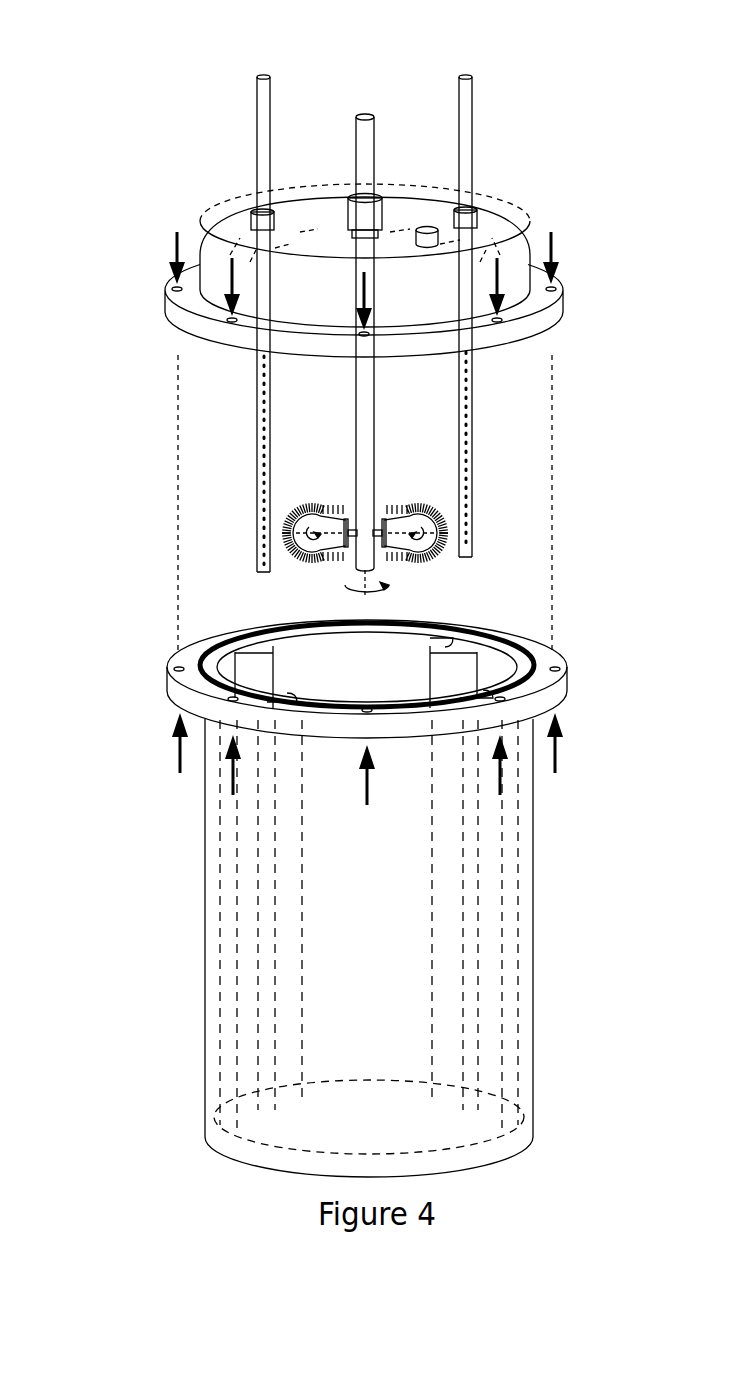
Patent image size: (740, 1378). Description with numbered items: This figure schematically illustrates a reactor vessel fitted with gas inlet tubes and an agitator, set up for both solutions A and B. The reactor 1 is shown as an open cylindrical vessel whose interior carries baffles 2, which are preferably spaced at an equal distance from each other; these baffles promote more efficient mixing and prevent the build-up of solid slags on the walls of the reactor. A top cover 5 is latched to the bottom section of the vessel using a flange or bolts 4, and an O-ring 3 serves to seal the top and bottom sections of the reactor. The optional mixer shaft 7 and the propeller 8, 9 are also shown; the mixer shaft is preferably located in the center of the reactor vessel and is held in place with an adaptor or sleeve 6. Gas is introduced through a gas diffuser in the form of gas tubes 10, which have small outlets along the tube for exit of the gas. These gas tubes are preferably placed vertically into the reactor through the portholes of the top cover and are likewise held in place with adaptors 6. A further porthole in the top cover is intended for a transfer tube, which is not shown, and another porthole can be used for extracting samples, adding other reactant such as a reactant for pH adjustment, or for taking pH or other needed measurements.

The reactor 1 is at (533, 947).
The baffles 2 is at (455, 675).
The O-ring 3 is at (207, 648).
The flange or bolts 4 is at (170, 767).
The top cover 5 is at (517, 233).
The adaptor or sleeve 6 is at (353, 212).
The mixer shaft 7 is at (372, 115).
The propeller 8 is at (428, 503).
The propeller 9 is at (464, 449).
The gas tubes 10 is at (255, 117).